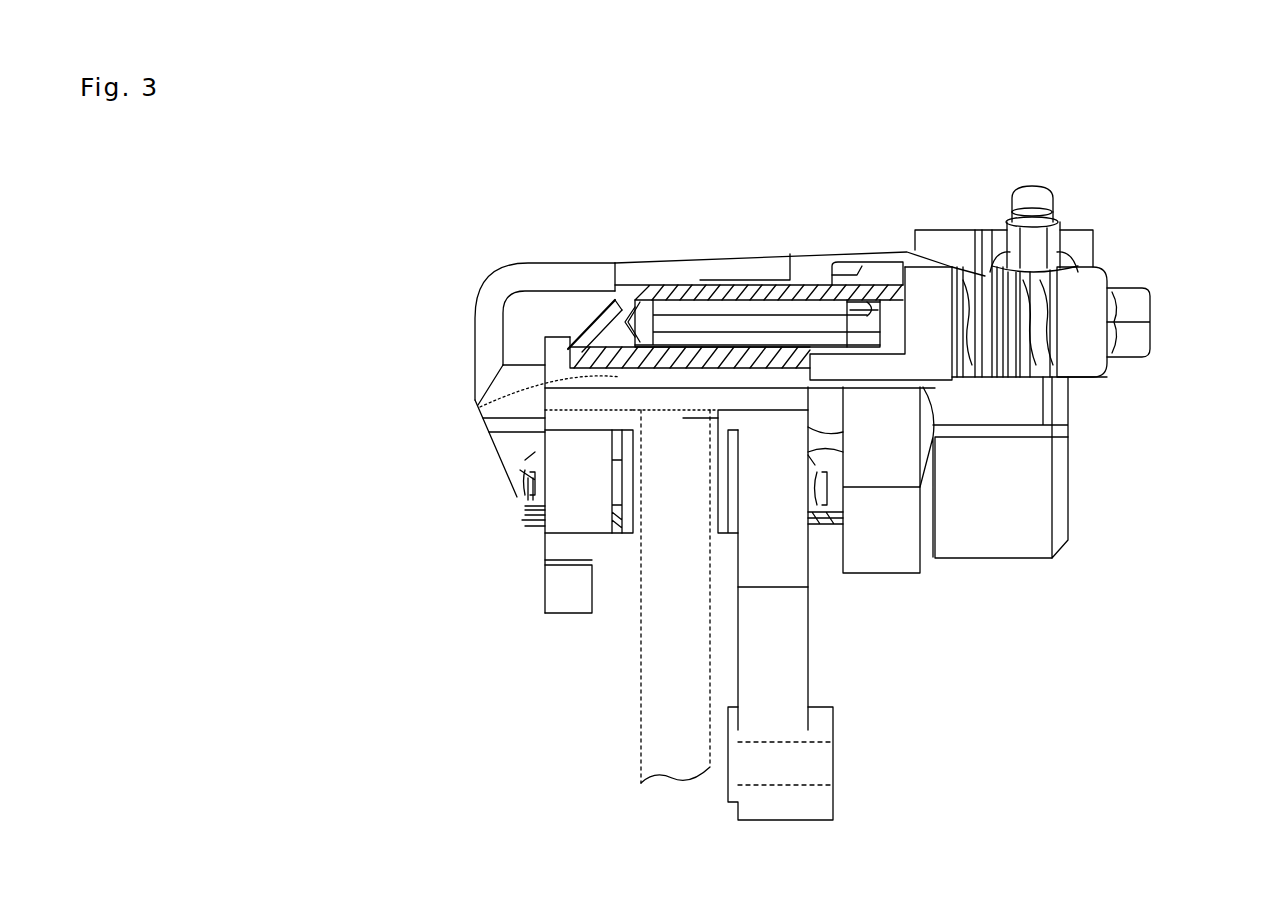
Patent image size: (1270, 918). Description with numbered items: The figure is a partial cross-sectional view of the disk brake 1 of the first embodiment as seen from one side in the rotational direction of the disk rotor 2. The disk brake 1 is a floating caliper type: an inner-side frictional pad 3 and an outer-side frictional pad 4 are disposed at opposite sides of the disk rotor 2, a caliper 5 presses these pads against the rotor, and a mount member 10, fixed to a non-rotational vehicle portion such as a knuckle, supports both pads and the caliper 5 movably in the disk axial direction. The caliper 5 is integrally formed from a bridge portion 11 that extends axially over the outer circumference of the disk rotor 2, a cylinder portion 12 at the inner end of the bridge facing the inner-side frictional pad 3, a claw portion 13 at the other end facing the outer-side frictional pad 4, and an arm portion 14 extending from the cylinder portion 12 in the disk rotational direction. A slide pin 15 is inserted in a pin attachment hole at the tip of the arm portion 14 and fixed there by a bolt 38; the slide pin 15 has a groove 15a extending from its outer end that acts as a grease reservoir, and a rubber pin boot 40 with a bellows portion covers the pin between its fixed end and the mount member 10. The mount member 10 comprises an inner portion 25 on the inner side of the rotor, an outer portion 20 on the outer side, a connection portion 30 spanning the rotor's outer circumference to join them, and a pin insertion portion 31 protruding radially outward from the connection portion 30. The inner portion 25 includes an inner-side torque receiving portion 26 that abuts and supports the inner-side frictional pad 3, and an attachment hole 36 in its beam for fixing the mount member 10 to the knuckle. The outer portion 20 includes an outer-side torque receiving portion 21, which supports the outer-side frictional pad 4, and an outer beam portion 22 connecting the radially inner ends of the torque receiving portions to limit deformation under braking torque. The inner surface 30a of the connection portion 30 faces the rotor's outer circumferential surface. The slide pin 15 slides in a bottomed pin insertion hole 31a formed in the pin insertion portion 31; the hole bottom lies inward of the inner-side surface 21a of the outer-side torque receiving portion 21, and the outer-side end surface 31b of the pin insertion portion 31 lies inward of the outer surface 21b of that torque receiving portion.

The disk brake 1 is at (1201, 204).
The disk rotor 2 is at (645, 712).
The inner-side frictional pad 3 is at (738, 590).
The outer-side frictional pad 4 is at (542, 540).
The caliper 5 is at (1000, 558).
The mount member 10 is at (853, 763).
The bridge portion 11 is at (720, 272).
The cylinder portion 12 is at (1033, 485).
The claw portion 13 is at (485, 343).
The arm portion 14 is at (1093, 268).
The slide pin 15 is at (848, 332).
The groove 15a is at (815, 310).
The outer portion 20 is at (528, 592).
The outer-side torque receiving portion 21 is at (517, 502).
The inner-side surface of the outer-side torque receiving portion 21a is at (620, 510).
The outer surface of the outer-side torque receiving portion 21b is at (545, 445).
The outer beam portion 22 is at (567, 600).
The inner portion 25 is at (838, 668).
The inner-side torque receiving portion 26 is at (790, 530).
The connection portion 30 is at (545, 435).
The inner surface of the connection portion 30a is at (683, 420).
The pin insertion portion 31 is at (770, 293).
The pin insertion hole 31a is at (660, 302).
The outer-side end surface 31b is at (572, 335).
The attachment hole 36 is at (840, 742).
The bolt 38 is at (1137, 305).
The rubber pin boot 40 is at (990, 275).